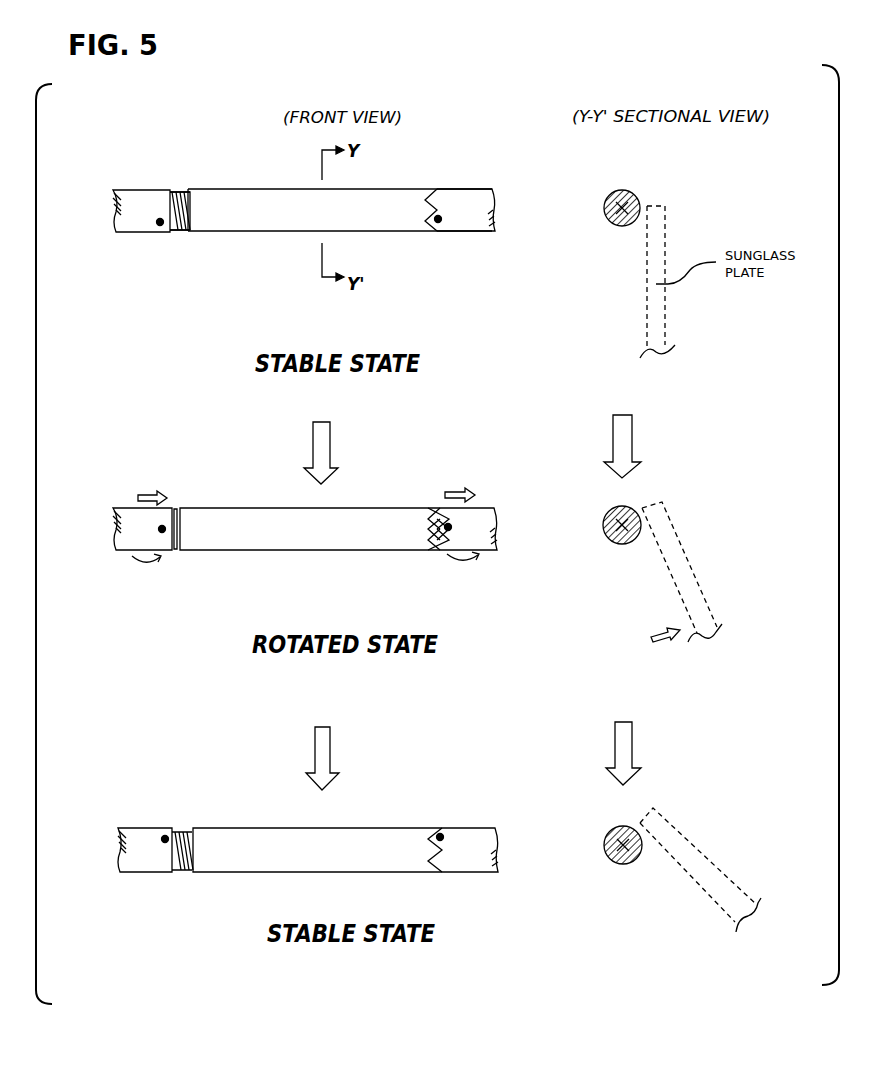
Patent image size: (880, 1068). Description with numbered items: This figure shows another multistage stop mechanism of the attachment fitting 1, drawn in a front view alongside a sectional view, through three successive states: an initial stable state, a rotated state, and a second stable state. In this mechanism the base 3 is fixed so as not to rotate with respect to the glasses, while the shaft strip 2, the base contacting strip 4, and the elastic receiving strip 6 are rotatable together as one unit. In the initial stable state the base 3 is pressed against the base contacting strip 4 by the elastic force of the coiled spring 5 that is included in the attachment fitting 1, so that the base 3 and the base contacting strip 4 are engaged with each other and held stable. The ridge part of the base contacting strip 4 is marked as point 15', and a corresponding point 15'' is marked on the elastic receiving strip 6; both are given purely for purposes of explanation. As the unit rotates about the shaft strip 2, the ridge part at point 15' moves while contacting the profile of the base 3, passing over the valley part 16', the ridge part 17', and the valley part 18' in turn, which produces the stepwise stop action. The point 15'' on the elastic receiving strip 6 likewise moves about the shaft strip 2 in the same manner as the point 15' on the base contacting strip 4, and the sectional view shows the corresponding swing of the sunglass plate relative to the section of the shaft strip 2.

The attachment fitting 1 is at (412, 187).
The shaft strip 2 is at (184, 203).
The base 3 is at (270, 200).
The base contacting strip 4 is at (470, 226).
The coiled spring 5 is at (180, 235).
The elastic receiving strip 6 is at (150, 232).
The point 15' is at (431, 261).
The point 15'' is at (141, 287).
The valley part 16' is at (402, 562).
The ridge part 17' is at (399, 529).
The valley part 18' is at (402, 498).